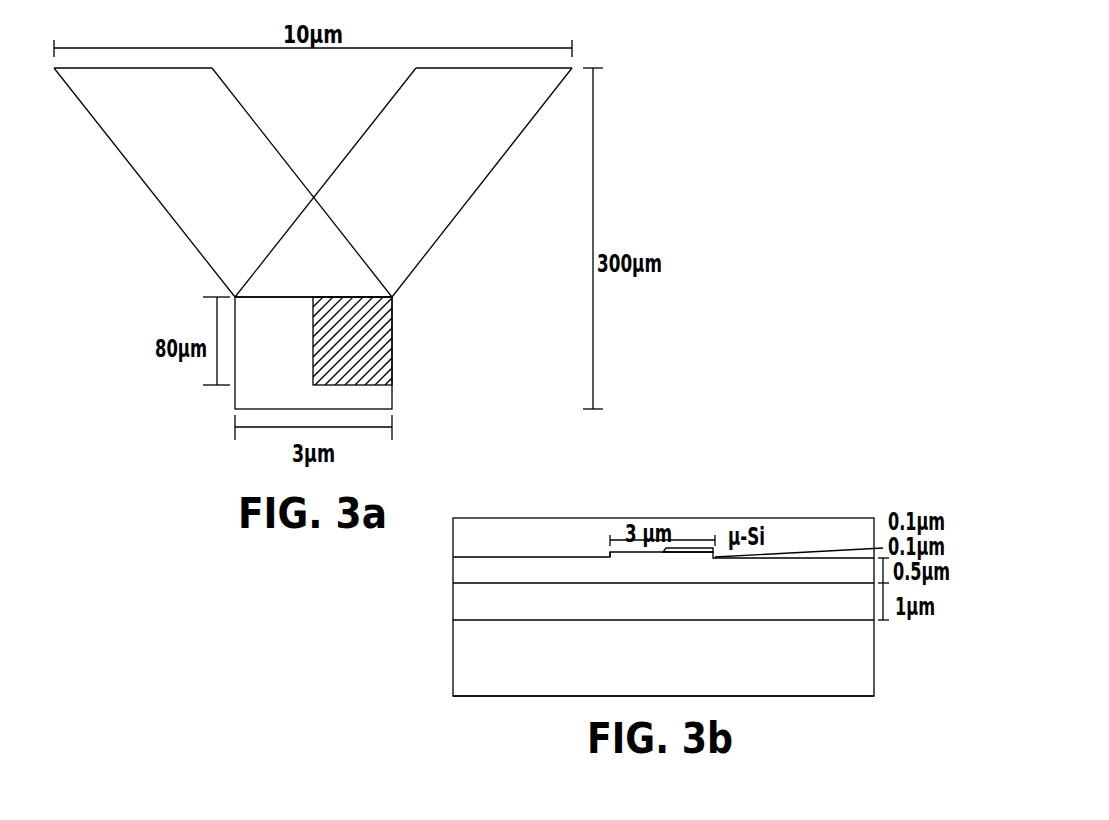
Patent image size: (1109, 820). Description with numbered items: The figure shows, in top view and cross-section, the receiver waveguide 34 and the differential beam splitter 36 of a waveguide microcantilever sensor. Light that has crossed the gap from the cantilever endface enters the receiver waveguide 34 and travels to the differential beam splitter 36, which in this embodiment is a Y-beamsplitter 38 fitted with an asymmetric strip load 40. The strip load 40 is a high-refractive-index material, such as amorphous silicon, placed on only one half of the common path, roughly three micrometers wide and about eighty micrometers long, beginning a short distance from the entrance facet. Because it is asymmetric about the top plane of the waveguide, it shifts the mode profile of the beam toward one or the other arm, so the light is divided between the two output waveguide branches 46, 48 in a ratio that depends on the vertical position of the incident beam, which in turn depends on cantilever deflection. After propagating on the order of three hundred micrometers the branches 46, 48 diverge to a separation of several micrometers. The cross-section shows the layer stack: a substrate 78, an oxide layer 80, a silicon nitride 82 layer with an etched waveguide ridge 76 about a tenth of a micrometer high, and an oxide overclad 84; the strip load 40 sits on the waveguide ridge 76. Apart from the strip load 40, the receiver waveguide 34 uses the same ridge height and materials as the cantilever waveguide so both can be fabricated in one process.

In FIG. 3a, the receiver waveguide 34 is at (272, 383).
In FIG. 3b, the receiver waveguide 34 is at (529, 572).
In FIG. 3a, the differential beam splitter 36 is at (422, 257).
In FIG. 3a, the Y-beamsplitter 38 is at (335, 293).
In FIG. 3a, the strip load 40 is at (357, 343).
In FIG. 3b, the strip load 40 is at (688, 551).
In FIG. 3a, the output waveguide branch 46 is at (432, 187).
In FIG. 3a, the output waveguide branch 48 is at (205, 186).
In FIG. 3b, the waveguide ridge 76 is at (627, 558).
In FIG. 3b, the substrate 78 is at (470, 668).
In FIG. 3b, the oxide layer 80 is at (528, 603).
In FIG. 3b, the silicon nitride 82 is at (767, 577).
In FIG. 3b, the oxide overclad 84 is at (566, 530).